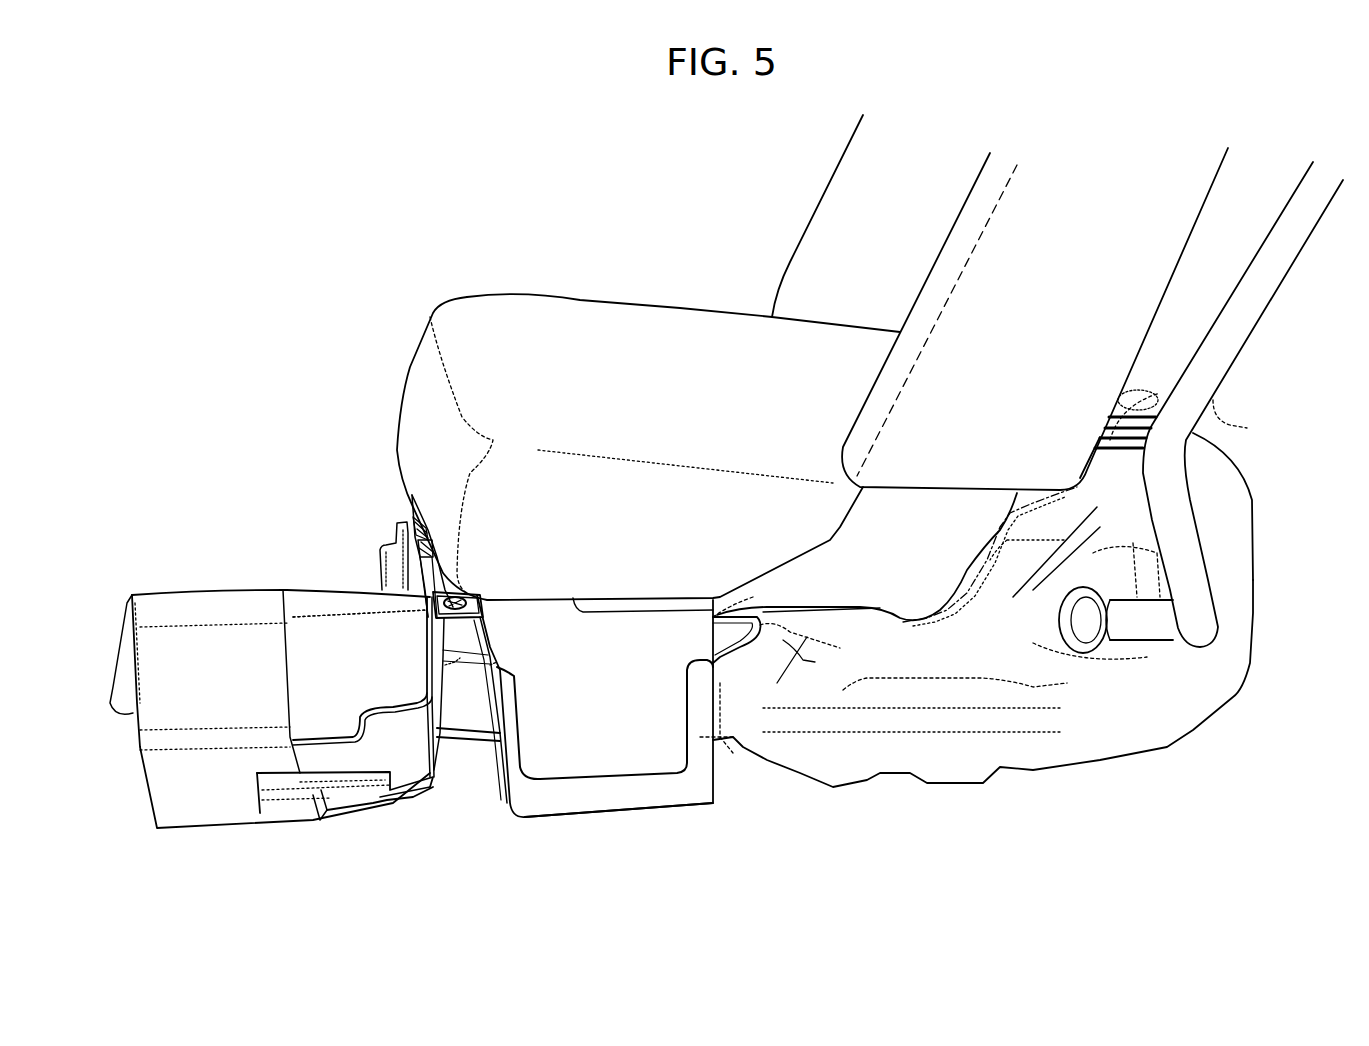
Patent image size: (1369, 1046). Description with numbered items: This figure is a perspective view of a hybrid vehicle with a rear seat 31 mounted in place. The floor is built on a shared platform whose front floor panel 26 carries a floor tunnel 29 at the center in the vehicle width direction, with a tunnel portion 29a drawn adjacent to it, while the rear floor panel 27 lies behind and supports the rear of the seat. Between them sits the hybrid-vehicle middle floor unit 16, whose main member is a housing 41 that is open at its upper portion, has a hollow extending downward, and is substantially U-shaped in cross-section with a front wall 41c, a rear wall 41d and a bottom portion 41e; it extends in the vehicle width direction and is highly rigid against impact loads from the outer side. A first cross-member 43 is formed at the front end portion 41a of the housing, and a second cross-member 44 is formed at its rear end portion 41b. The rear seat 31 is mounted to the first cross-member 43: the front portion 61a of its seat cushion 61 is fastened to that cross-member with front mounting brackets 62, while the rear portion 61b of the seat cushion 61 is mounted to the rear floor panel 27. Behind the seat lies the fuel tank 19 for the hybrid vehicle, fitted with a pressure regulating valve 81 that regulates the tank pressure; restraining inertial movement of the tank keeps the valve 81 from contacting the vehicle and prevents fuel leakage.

The hybrid-vehicle middle floor unit 16 is at (372, 545).
The fuel tank for a hybrid vehicle 19 is at (1250, 605).
The front floor panel 26 is at (218, 756).
The rear floor panel 27 is at (1042, 503).
The floor tunnel 29 is at (195, 608).
The lid portion 29a is at (310, 606).
The rear seat 31 is at (810, 237).
The housing 41 is at (500, 800).
The front end portion of the housing 41a is at (427, 700).
The rear end portion of the housing 41b is at (752, 608).
The front wall 41c is at (430, 782).
The rear wall 41d is at (743, 747).
The bottom portion 41e is at (633, 813).
The first cross-member 43 is at (465, 636).
The second cross-member 44 is at (802, 670).
The seat cushion 61 is at (632, 325).
The front portion of the seat cushion 61a is at (410, 415).
The rear portion of the seat cushion 61b is at (870, 610).
The front mounting bracket 62 is at (405, 510).
The valve 81 is at (1140, 400).